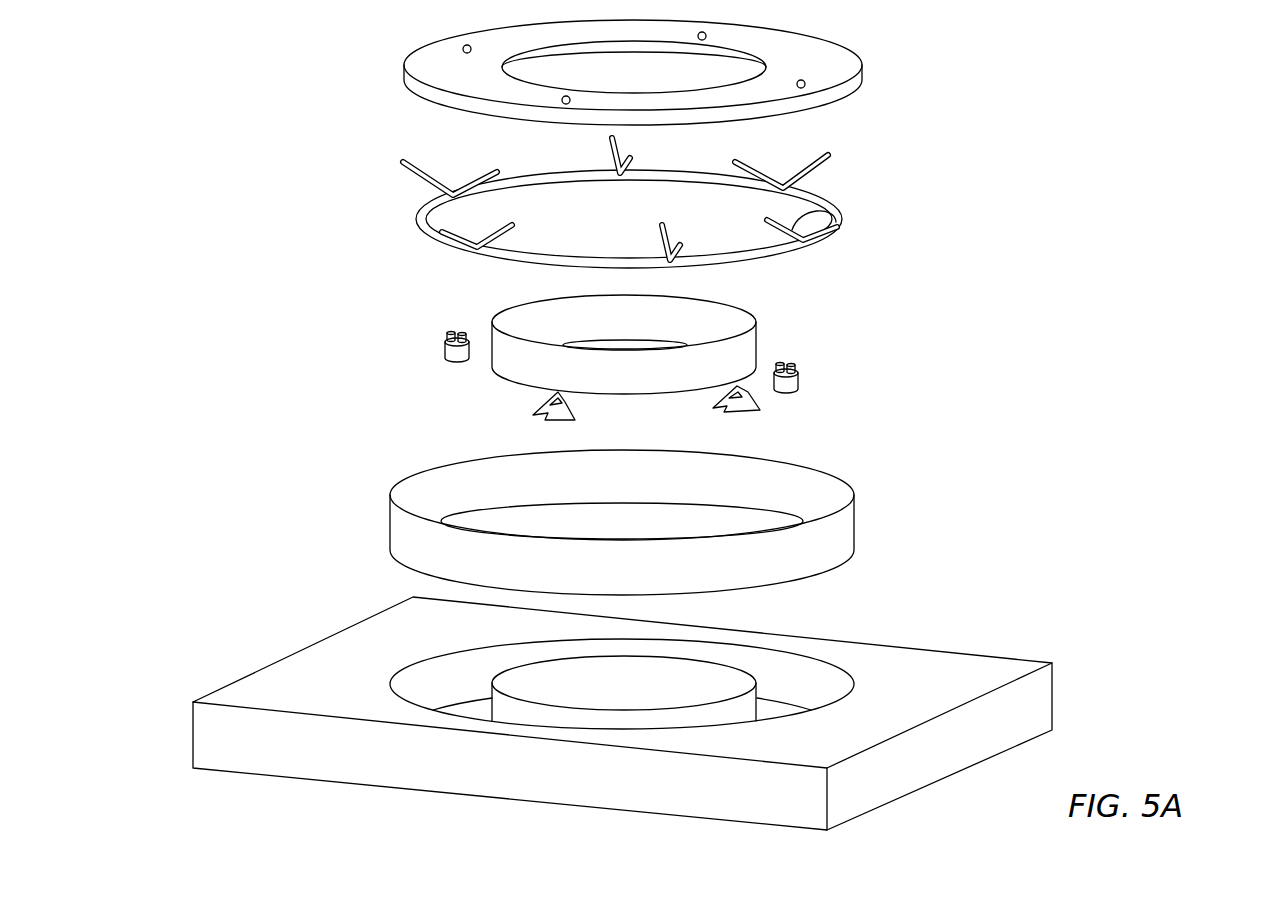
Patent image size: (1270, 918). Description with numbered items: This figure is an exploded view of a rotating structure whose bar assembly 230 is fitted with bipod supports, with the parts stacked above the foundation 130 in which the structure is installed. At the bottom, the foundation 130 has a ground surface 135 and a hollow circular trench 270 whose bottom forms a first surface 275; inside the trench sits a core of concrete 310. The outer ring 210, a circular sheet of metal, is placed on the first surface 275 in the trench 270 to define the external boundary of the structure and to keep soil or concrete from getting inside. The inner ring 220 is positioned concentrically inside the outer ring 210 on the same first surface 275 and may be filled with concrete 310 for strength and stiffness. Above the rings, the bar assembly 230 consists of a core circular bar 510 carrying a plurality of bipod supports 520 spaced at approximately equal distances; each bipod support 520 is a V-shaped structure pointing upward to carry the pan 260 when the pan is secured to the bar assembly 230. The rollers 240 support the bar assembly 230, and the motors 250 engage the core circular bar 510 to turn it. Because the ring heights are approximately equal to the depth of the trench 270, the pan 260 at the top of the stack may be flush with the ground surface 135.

The pan 260 is at (838, 60).
The bar assembly 230 is at (825, 201).
The bipod supports 520 is at (826, 177).
The core circular bar 510 is at (767, 253).
The inner ring 220 is at (715, 312).
The motors 250 is at (800, 373).
The rollers 240 is at (577, 410).
The outer ring 210 is at (837, 537).
The trench 270 is at (467, 678).
The first surface 275 is at (772, 707).
The ground surface 135 is at (963, 660).
The foundation 130 is at (1037, 702).
The concrete 310 is at (555, 690).